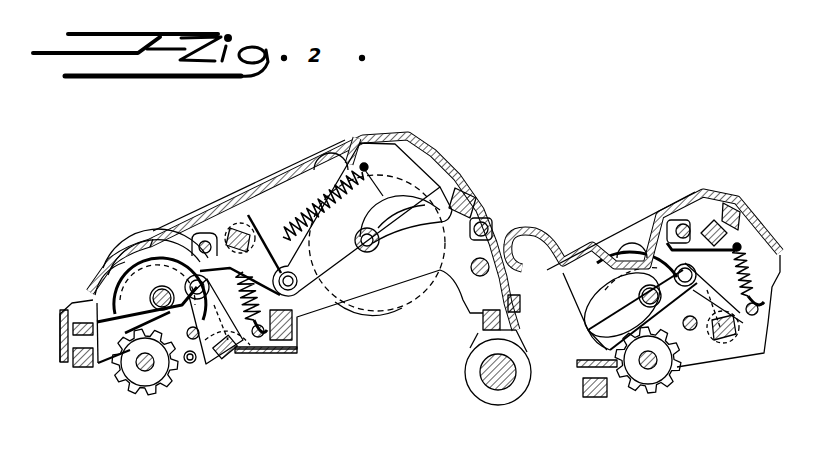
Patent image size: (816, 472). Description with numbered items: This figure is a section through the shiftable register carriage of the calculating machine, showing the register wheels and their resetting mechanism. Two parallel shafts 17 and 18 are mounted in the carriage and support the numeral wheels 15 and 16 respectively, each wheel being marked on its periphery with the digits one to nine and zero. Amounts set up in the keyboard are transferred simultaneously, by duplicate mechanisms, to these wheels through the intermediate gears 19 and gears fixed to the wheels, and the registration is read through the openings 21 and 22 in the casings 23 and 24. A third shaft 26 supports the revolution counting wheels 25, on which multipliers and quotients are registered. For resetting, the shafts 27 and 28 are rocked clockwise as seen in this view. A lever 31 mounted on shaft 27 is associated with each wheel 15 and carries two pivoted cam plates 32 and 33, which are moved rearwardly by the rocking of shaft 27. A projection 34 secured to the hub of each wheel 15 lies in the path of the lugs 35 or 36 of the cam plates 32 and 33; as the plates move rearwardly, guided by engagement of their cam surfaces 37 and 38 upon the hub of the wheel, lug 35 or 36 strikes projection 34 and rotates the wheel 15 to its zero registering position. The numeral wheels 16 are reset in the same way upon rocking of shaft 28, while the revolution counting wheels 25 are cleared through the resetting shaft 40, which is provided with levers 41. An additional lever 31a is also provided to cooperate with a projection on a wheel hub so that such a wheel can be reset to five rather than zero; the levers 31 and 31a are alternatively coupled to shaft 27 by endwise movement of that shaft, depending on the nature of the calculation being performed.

The numeral wheel 15 is at (168, 265).
The numeral wheel 16 is at (659, 257).
The shaft 17 is at (186, 276).
The shaft 18 is at (650, 288).
The intermediate gear 19 is at (146, 396).
The opening 21 is at (146, 243).
The opening 22 is at (627, 242).
The casing 23 is at (434, 146).
The casing 24 is at (731, 200).
The revolution counting wheel 25 is at (394, 308).
The third shaft 26 is at (368, 252).
The resetting shaft 27 is at (216, 366).
The resetting shaft 28 is at (733, 338).
The lever 31 is at (255, 350).
The additional lever 31a is at (749, 404).
The cam plate 32 is at (90, 278).
The cam plate 33 is at (105, 370).
The projection 34 is at (143, 290).
The lug 35 is at (118, 352).
The lug 36 is at (108, 270).
The cam surface 37 is at (92, 296).
The cam surface 38 is at (90, 305).
The resetting shaft 40 is at (244, 224).
The lever 41 is at (258, 226).